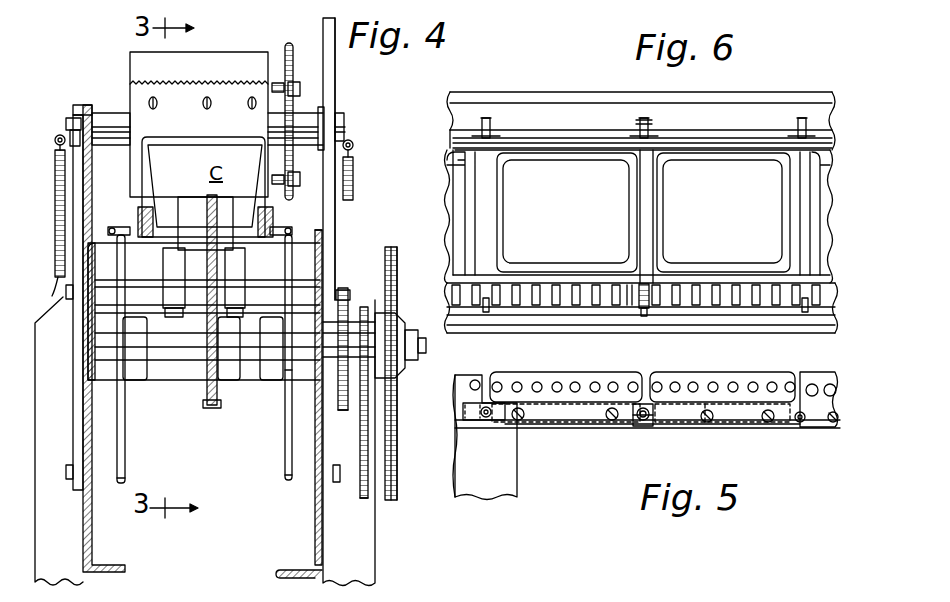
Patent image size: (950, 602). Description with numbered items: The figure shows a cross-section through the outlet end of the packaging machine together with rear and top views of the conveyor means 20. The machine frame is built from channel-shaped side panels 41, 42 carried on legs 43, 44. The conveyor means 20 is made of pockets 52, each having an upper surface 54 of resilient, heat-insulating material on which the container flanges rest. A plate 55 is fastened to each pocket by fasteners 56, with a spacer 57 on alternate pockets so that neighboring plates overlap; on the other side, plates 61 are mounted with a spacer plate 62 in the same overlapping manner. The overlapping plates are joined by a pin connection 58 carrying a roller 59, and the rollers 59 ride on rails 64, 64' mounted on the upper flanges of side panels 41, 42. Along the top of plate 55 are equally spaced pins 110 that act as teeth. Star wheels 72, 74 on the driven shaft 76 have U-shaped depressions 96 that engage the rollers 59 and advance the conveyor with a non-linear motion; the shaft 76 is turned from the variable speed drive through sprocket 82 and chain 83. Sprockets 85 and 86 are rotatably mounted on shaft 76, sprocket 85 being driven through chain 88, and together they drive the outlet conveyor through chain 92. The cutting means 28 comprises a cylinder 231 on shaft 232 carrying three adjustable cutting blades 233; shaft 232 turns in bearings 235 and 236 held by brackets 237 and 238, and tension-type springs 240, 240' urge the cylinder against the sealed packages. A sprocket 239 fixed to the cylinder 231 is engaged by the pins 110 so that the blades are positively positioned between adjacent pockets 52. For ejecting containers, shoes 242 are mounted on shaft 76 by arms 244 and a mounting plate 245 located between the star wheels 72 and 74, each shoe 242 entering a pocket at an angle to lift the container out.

In FIG. 4, the cutting means 28 is at (110, 60).
In FIG. 4, the cylinder 231 is at (232, 60).
In FIG. 4, the shaft 232 is at (110, 115).
In FIG. 4, the cutting blades 233 is at (200, 83).
In FIG. 4, the bearing 235 is at (80, 100).
In FIG. 4, the bearing 236 is at (340, 115).
In FIG. 4, the bracket 237 is at (80, 389).
In FIG. 4, the bracket 238 is at (331, 92).
In FIG. 4, the sprocket 239 is at (290, 114).
In FIG. 4, the tension-type spring 240 is at (42, 220).
In FIG. 4, the tension-type spring 240' is at (378, 166).
In FIG. 4, the shoe 242 is at (190, 222).
In FIG. 4, the arm 244 is at (212, 263).
In FIG. 4, the mounting plate 245 is at (200, 405).
In FIG. 4, the leg 43 is at (73, 551).
In FIG. 4, the side panel 41 is at (93, 528).
In FIG. 6, the side panel 41 is at (515, 93).
In FIG. 4, the side panel 42 is at (316, 528).
In FIG. 6, the side panel 42 is at (483, 325).
In FIG. 5, the side panel 42 is at (500, 480).
In FIG. 4, the leg 44 is at (362, 531).
In FIG. 4, the roller 59 is at (105, 237).
In FIG. 6, the roller 59 is at (637, 122).
In FIG. 5, the roller 59 is at (642, 422).
In FIG. 4, the rail 64 is at (204, 311).
In FIG. 6, the rail 64 is at (468, 103).
In FIG. 4, the rail 64' is at (311, 254).
In FIG. 6, the rail 64' is at (430, 231).
In FIG. 4, the star wheel 72 is at (127, 433).
In FIG. 4, the star wheel 74 is at (285, 444).
In FIG. 4, the driven shaft 76 is at (173, 350).
In FIG. 4, the sprocket 82 is at (397, 268).
In FIG. 4, the chain 83 is at (398, 476).
In FIG. 4, the sprocket 85 is at (368, 305).
In FIG. 4, the sprocket 86 is at (352, 287).
In FIG. 4, the chain 88 is at (364, 489).
In FIG. 4, the chain 92 is at (348, 408).
In FIG. 4, the U-shaped depression 96 is at (122, 481).
In FIG. 6, the pin 110 is at (518, 288).
In FIG. 5, the pin 110 is at (470, 385).
In FIG. 6, the conveyor means 20 is at (747, 130).
In FIG. 5, the conveyor means 20 is at (773, 436).
In FIG. 6, the pocket 52 is at (503, 233).
In FIG. 6, the upper surface 54 is at (636, 185).
In FIG. 6, the plate 55 is at (543, 284).
In FIG. 5, the plate 55 is at (580, 412).
In FIG. 5, the fastener 56 is at (520, 420).
In FIG. 6, the spacer 57 is at (720, 282).
In FIG. 5, the spacer 57 is at (703, 378).
In FIG. 6, the pin connection 58 is at (641, 118).
In FIG. 5, the pin connection 58 is at (645, 426).
In FIG. 6, the plate 61 is at (560, 145).
In FIG. 6, the spacer plate 62 is at (735, 148).